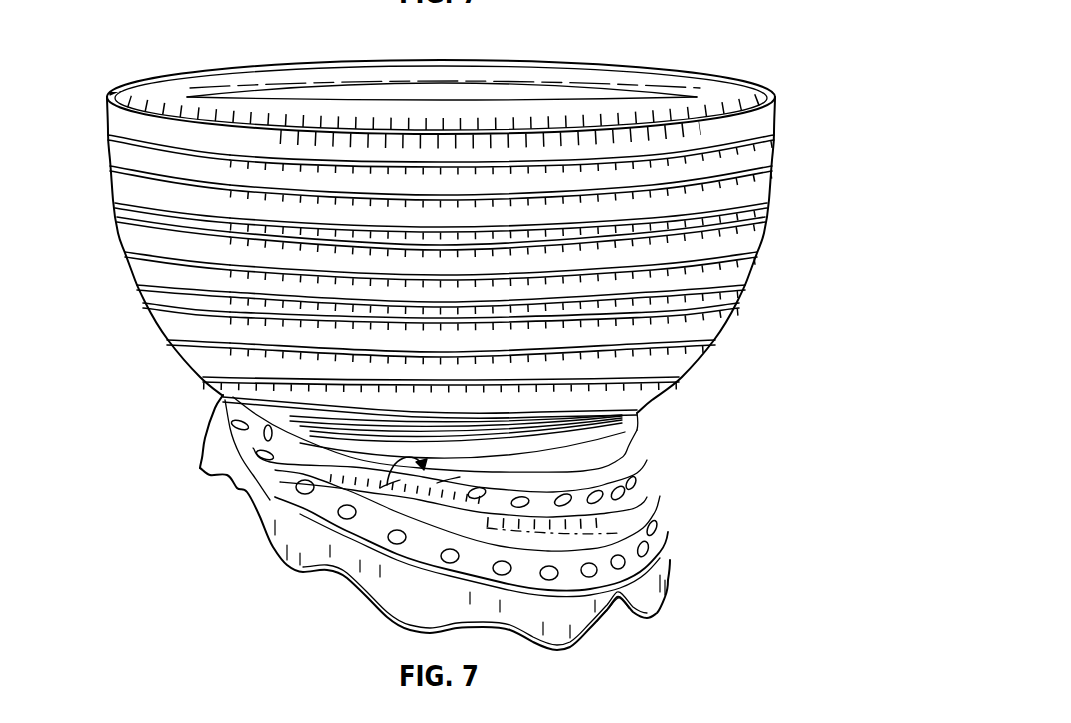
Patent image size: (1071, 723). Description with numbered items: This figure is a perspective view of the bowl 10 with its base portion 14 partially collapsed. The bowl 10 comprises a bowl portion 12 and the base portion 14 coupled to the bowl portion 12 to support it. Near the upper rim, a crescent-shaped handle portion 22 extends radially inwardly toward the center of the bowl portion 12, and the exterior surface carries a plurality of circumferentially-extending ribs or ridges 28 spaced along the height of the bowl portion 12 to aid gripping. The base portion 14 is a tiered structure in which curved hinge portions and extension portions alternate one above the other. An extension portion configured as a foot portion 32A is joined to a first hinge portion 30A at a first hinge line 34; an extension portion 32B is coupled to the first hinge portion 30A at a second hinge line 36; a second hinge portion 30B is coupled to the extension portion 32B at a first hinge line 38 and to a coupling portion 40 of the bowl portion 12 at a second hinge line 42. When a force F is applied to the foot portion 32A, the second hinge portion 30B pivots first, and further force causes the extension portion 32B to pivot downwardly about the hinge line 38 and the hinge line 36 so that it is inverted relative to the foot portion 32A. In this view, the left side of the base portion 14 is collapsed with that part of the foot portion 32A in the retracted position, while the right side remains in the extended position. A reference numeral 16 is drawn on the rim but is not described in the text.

The bowl 10 is at (700, 31).
The bowl portion 12 is at (771, 208).
The base portion 14 is at (722, 490).
The rim 16 is at (108, 98).
The handle portion 22 is at (540, 84).
The circumferentially-extending ribs or ridges 28 is at (773, 133).
The first hinge portion 30A is at (651, 544).
The second hinge portion 30B is at (638, 482).
The foot portion 32A is at (658, 574).
The extension portion 32B is at (353, 471).
The first hinge line 34 is at (620, 604).
The second hinge line 36 is at (400, 480).
The first hinge line 38 is at (460, 477).
The coupling portion 40 is at (633, 414).
The second hinge line 42 is at (630, 446).
The force F is at (202, 462).